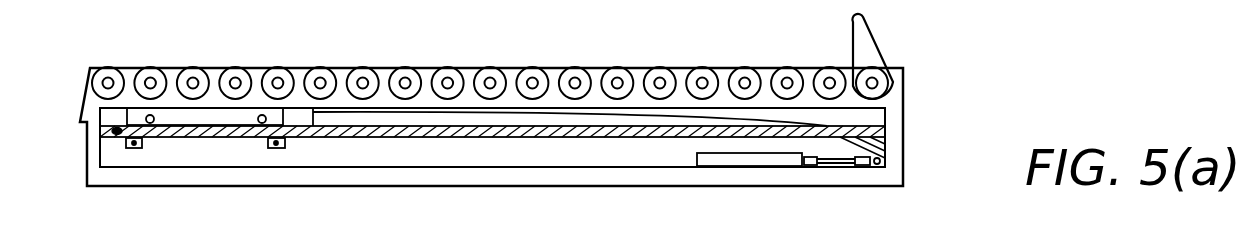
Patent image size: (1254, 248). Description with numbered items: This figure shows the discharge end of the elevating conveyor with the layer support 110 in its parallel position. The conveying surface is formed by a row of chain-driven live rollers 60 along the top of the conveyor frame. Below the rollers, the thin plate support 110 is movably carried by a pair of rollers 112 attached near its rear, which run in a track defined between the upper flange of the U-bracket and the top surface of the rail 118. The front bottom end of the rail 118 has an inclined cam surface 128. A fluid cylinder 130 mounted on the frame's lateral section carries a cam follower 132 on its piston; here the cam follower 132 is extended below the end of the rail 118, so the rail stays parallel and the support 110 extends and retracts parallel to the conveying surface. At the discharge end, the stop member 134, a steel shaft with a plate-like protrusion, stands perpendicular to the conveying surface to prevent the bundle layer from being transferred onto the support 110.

The rollers 60 is at (613, 66).
The support 110 is at (430, 120).
The pair of rollers 112 is at (262, 116).
The rail 118 is at (902, 118).
The inclined cam surface 128 is at (887, 144).
The fluid cylinder 130 is at (748, 160).
The cam follower 132 is at (886, 167).
The stop member 134 is at (867, 57).